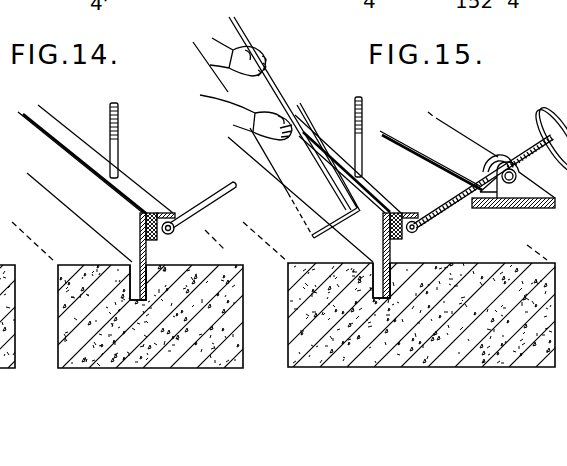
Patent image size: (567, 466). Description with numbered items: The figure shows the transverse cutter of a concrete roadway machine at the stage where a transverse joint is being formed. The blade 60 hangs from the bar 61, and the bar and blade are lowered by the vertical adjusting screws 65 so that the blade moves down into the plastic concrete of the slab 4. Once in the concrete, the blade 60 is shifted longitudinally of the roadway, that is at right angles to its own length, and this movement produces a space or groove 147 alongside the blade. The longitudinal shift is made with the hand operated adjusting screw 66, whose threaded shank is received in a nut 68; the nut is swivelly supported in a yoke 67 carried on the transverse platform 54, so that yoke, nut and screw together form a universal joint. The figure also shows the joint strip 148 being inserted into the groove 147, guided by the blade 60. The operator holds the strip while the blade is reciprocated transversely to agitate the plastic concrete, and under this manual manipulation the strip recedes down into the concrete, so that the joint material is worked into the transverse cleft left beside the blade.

In FIG. 14, the concrete slab 4 is at (150, 369).
In FIG. 15, the concrete slab 4 is at (388, 368).
In FIG. 15, the platform 54 is at (543, 210).
In FIG. 14, the blade 60 is at (72, 208).
In FIG. 15, the blade 60 is at (392, 215).
In FIG. 15, the bar 61 is at (393, 197).
In FIG. 15, the vertical adjusting screw 65 is at (363, 108).
In FIG. 15, the adjusting screw 66 is at (452, 190).
In FIG. 15, the yoke 67 is at (509, 193).
In FIG. 15, the nut 68 is at (498, 153).
In FIG. 14, the groove 147 is at (133, 280).
In FIG. 15, the groove 147 is at (375, 282).
In FIG. 15, the joint strip 148 is at (231, 101).